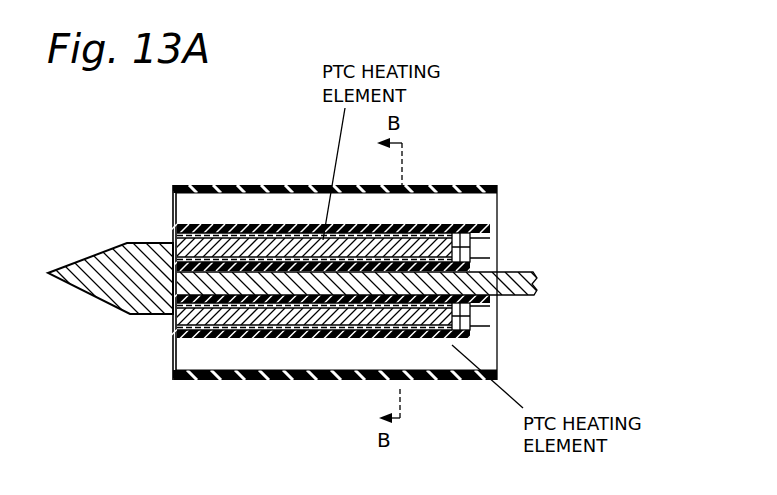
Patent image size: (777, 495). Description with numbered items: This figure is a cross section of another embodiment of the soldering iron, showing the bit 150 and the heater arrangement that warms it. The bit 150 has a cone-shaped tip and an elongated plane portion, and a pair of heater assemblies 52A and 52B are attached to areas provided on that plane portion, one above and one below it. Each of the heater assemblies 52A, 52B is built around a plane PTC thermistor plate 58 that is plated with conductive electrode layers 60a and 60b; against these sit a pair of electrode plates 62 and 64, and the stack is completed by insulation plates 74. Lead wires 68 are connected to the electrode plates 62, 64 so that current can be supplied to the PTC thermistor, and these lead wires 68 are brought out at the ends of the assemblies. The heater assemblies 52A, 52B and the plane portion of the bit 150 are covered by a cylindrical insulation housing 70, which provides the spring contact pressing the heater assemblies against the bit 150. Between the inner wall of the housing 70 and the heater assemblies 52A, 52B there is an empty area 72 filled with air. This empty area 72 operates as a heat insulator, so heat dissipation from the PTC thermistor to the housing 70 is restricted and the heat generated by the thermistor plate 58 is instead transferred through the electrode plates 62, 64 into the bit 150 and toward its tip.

The heater assembly 52A is at (349, 293).
The heater assembly 52B is at (326, 354).
The plane PTC thermistor plate 58 is at (173, 237).
The conductive electrode layer 60a is at (177, 283).
The conductive electrode layer 60b is at (210, 224).
The electrode plate 62 is at (458, 226).
The electrode plate 64 is at (470, 250).
The lead wire 68 is at (490, 238).
The cylindrical insulation housing 70 is at (445, 380).
The empty area 72 is at (242, 203).
The insulation plate 74 is at (279, 223).
The bit 150 is at (113, 296).